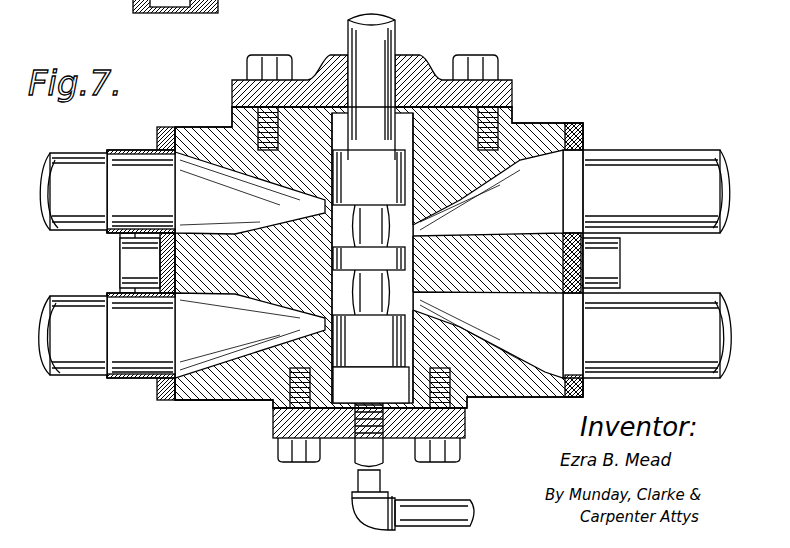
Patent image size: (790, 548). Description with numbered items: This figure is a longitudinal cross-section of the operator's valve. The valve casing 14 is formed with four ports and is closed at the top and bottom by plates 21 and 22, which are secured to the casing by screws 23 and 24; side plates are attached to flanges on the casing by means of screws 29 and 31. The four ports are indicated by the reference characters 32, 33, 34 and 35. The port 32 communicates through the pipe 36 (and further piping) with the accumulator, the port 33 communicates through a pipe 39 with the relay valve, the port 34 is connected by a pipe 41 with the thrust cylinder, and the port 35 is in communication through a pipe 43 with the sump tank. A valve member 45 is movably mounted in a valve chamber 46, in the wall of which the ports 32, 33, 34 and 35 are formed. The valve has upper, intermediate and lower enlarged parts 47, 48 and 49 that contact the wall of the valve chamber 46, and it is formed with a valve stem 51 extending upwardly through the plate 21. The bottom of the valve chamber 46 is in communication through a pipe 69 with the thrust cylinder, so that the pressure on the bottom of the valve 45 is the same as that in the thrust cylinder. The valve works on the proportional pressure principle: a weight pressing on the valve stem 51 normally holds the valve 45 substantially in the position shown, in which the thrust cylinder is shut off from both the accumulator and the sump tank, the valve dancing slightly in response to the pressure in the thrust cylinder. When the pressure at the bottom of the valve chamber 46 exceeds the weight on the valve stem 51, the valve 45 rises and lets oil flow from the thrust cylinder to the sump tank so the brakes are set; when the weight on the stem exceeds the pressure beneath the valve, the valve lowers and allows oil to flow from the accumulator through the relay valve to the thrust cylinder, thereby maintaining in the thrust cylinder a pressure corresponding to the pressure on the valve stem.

The valve casing 14 is at (538, 128).
The top plate 21 is at (425, 72).
The bottom plate 22 is at (340, 440).
The screws 23 is at (478, 58).
The screws 24 is at (290, 462).
The screws 29 is at (622, 262).
The screws 31 is at (118, 264).
The port 32 is at (258, 400).
The port 33 is at (330, 282).
The port 34 is at (330, 228).
The port 35 is at (344, 174).
The pipe 36 is at (85, 366).
The pipe 39 is at (715, 298).
The pipe 41 is at (648, 150).
The pipe 43 is at (100, 152).
The valve member 45 is at (432, 178).
The valve chamber 46 is at (400, 130).
The upper enlarged part 47 is at (420, 190).
The intermediate enlarged part 48 is at (425, 257).
The lower enlarged part 49 is at (397, 369).
The valve stem 51 is at (398, 26).
The pipe 69 is at (385, 455).